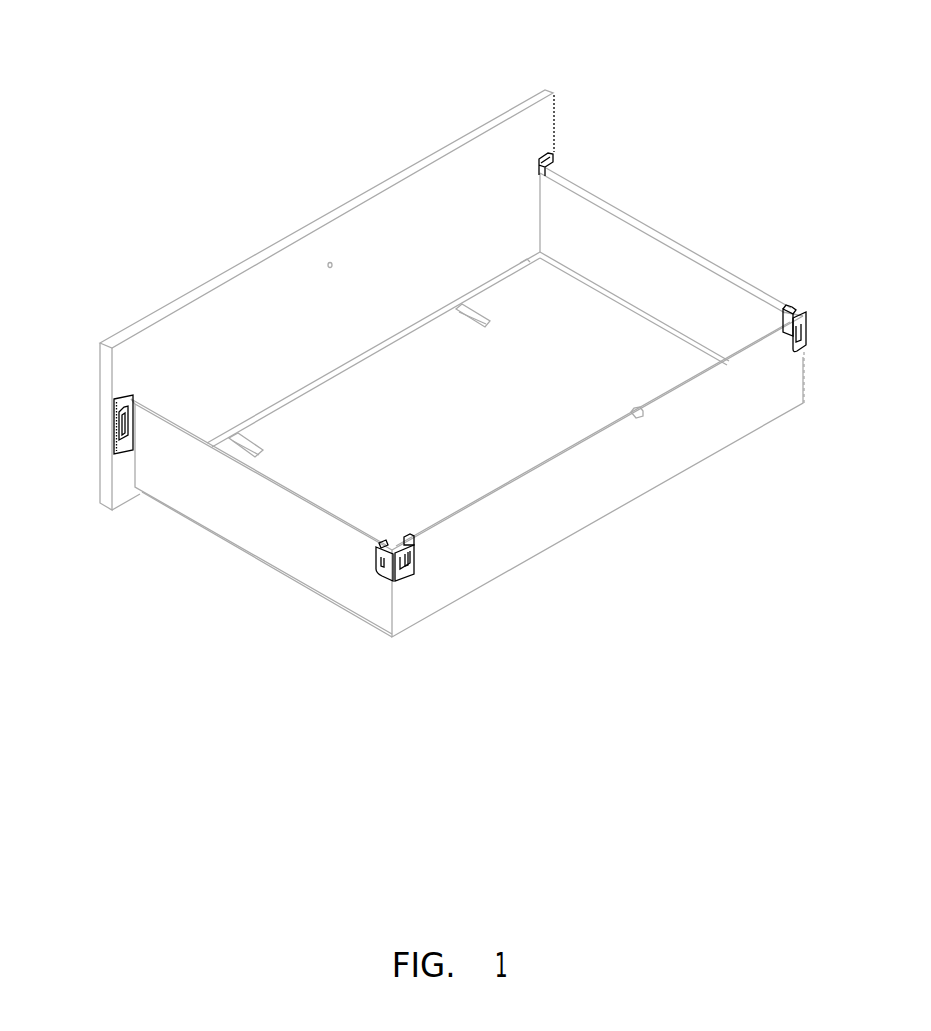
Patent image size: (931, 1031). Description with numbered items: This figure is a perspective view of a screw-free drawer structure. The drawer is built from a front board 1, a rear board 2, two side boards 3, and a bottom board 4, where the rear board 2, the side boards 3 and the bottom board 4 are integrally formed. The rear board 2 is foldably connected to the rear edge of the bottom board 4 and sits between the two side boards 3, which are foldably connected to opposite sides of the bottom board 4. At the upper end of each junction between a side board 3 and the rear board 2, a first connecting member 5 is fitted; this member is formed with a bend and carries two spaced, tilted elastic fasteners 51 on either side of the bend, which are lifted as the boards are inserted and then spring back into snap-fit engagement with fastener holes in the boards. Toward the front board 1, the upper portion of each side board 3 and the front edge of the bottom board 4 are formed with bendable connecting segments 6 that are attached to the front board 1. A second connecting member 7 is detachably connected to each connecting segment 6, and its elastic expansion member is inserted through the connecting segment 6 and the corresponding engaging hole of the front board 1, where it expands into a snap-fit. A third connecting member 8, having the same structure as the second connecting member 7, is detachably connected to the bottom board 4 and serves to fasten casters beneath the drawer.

The front board 1 is at (370, 224).
The rear board 2 is at (712, 430).
The side boards 3 is at (705, 290).
The bottom board 4 is at (565, 300).
The first connecting member 5 is at (405, 580).
The elastic fastener 51 is at (410, 568).
The bendable connecting segment 6 is at (130, 400).
The second connecting member 7 is at (120, 400).
The third connecting member 8 is at (462, 300).